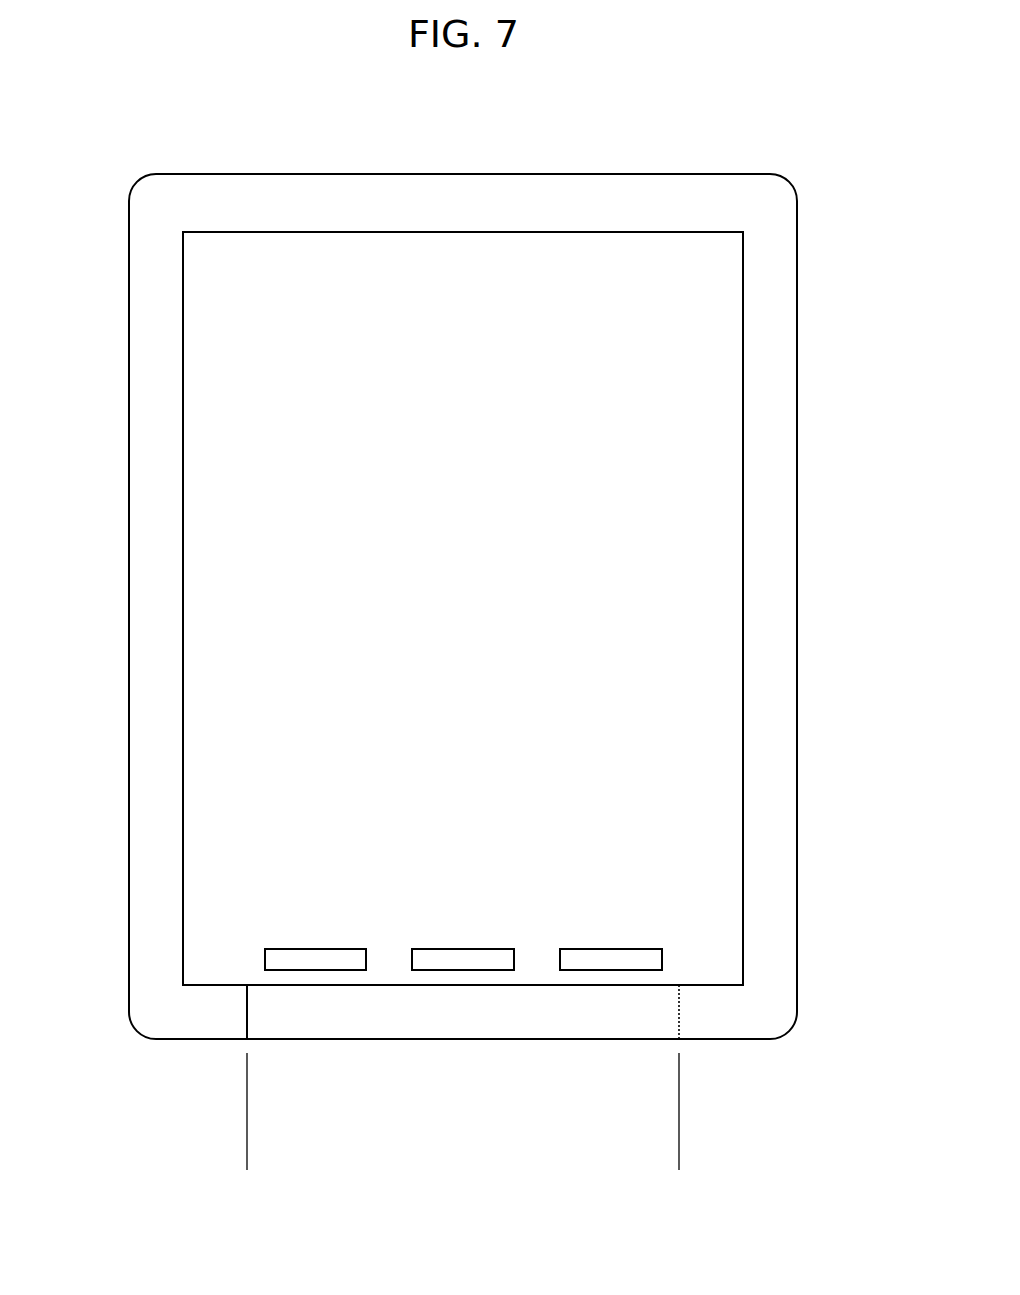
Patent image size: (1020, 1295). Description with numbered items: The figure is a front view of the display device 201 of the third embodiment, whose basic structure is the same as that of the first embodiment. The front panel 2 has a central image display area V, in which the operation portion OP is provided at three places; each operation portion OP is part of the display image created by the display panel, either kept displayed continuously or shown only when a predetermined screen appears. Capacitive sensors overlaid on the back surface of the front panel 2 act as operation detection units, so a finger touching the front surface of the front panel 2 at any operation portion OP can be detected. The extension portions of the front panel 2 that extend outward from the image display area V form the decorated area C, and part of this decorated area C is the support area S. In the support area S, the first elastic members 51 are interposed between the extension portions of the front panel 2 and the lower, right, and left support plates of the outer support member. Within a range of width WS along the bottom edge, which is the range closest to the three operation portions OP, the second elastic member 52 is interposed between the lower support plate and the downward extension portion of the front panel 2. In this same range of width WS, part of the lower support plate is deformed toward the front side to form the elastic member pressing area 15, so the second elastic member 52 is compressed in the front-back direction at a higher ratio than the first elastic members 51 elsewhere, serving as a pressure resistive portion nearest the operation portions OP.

The display device 201 is at (738, 132).
The front panel 2 is at (542, 250).
The image display area V is at (725, 572).
The decorated area C is at (772, 697).
The support area S is at (772, 826).
The first elastic members 51 is at (150, 860).
The elastic member pressing area 15 is at (304, 1018).
The second elastic member 52 is at (615, 1018).
The operation portion OP is at (597, 960).
The width WS is at (679, 1159).